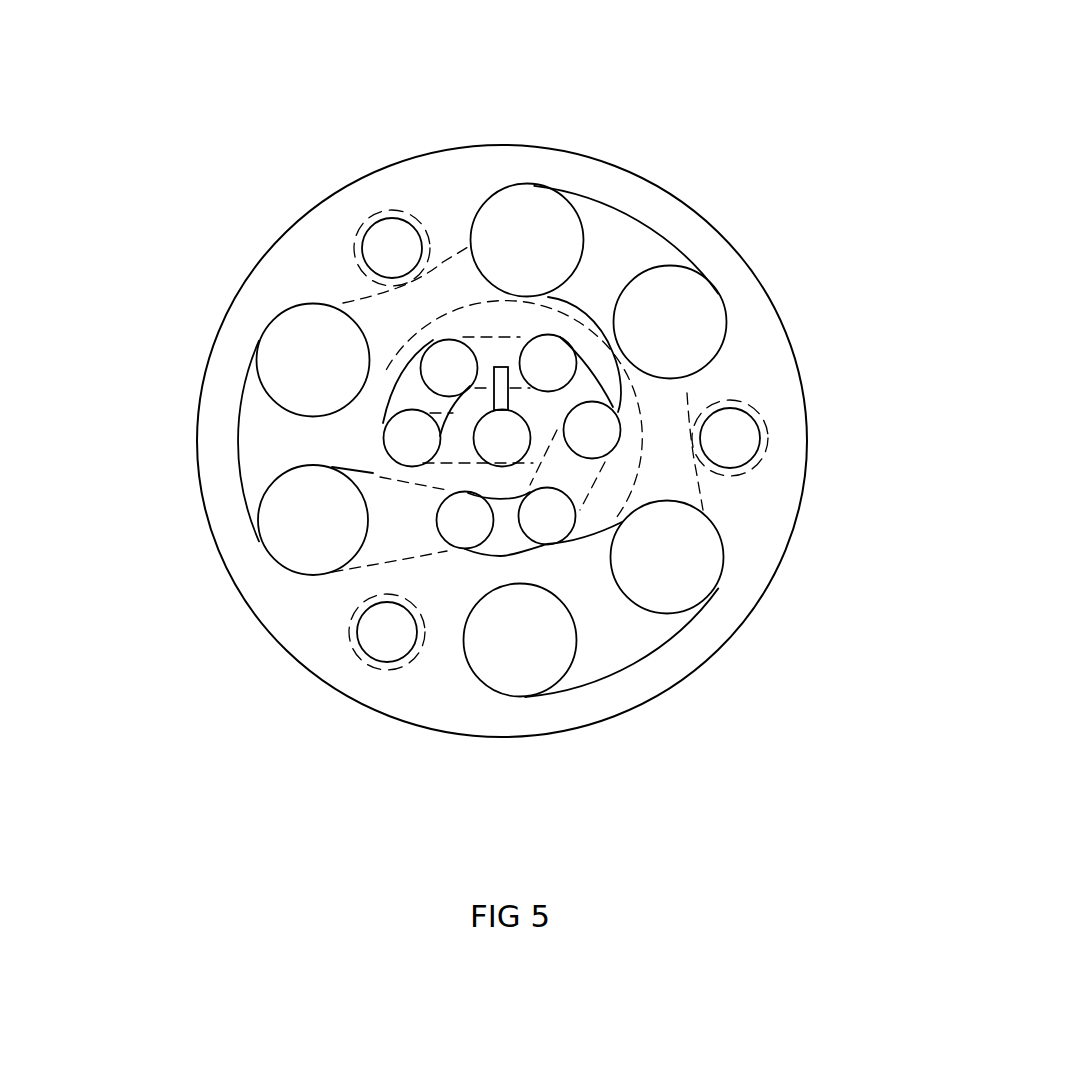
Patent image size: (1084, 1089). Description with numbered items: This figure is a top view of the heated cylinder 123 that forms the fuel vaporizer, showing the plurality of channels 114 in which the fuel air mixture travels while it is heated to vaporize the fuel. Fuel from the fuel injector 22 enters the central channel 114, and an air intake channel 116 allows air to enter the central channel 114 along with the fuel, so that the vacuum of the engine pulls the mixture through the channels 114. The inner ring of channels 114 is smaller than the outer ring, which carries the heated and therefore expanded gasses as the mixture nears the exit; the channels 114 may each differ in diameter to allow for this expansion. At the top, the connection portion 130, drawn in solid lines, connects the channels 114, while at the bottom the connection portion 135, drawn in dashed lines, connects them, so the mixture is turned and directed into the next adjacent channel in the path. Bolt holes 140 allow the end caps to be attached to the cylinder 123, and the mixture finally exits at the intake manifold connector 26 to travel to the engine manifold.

The fuel injector 22 is at (500, 445).
The intake manifold connector 26 is at (527, 650).
The channel 114 is at (547, 228).
The air intake channel 116 is at (500, 372).
The heated cylinder 123 is at (197, 430).
The top connection portion 130 is at (622, 633).
The bottom connection portion 135 is at (677, 475).
The bolt hole 140 is at (377, 238).